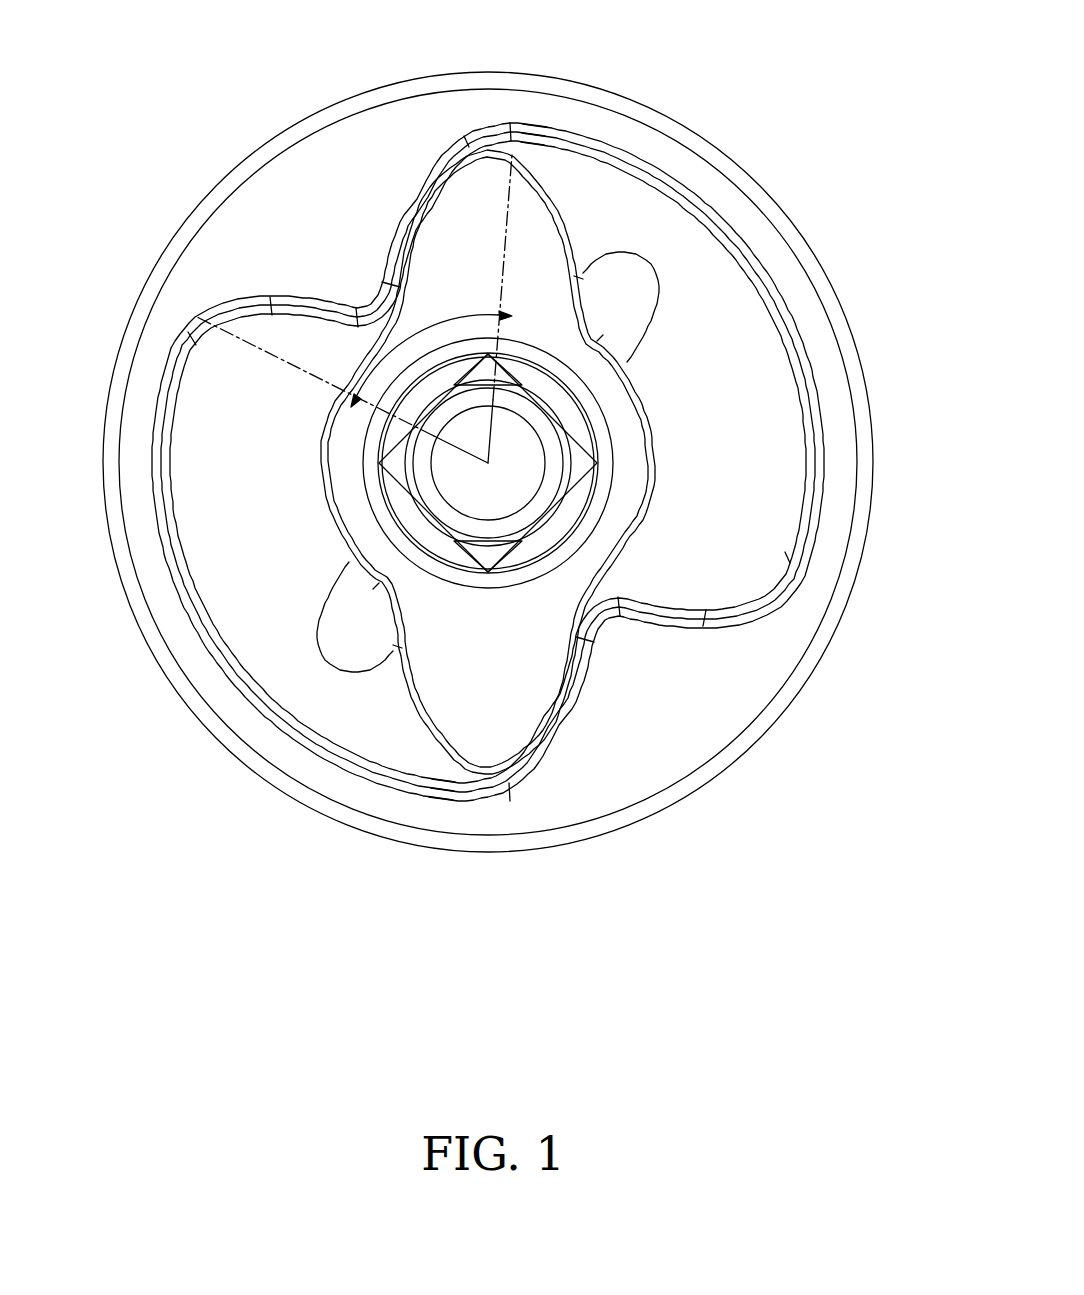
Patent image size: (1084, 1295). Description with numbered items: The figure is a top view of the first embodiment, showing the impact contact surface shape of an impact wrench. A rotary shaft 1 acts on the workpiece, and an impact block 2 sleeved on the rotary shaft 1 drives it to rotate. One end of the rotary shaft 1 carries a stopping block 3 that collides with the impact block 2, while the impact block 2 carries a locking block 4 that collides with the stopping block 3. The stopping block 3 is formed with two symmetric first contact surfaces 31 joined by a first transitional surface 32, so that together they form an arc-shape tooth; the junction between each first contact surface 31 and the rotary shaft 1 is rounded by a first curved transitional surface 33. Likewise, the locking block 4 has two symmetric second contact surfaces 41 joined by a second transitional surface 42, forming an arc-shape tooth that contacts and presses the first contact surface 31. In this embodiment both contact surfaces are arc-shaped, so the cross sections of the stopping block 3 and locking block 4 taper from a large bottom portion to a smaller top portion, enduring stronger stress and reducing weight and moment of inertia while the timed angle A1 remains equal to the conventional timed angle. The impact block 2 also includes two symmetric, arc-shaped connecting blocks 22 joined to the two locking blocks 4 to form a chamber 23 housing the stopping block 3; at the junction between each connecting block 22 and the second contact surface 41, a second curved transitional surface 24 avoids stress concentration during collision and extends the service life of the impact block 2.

The rotary shaft 1 is at (661, 462).
The impact block 2 is at (340, 821).
The connecting block 22 is at (813, 340).
The chamber 23 is at (240, 570).
The second curved transitional surface 24 is at (180, 336).
The stopping block 3 is at (523, 225).
The first contact surface 31 is at (570, 223).
The first transitional surface 32 is at (487, 125).
The first curved transitional surface 33 is at (399, 309).
The locking block 4 is at (323, 230).
The second contact surface 41 is at (405, 210).
The second transitional surface 42 is at (372, 292).
The timed angle A1 is at (354, 309).